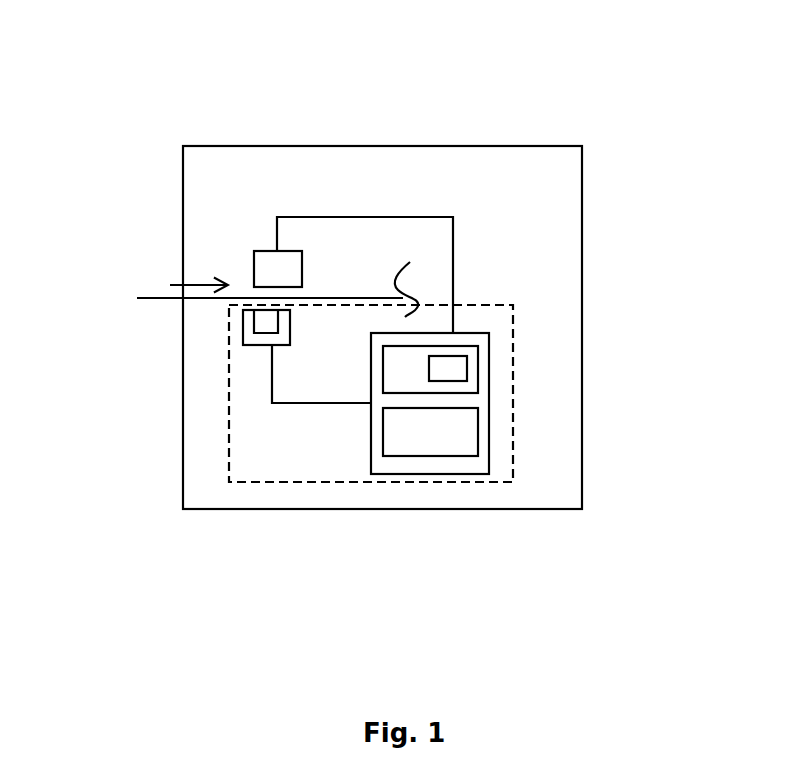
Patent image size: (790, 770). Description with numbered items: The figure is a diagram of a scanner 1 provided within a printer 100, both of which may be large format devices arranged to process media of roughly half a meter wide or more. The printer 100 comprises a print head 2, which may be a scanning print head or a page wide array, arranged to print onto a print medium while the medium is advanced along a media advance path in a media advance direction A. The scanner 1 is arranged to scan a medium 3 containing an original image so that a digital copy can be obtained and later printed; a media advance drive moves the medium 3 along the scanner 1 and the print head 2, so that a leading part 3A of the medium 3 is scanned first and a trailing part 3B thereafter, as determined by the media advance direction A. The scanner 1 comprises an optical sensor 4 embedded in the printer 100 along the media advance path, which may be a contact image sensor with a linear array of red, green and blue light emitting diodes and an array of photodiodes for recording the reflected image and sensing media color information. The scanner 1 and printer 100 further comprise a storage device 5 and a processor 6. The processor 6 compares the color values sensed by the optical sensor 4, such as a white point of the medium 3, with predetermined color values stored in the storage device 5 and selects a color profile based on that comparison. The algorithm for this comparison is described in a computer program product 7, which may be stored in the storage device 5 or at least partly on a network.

The printer 100 is at (582, 203).
The scanner 1 is at (228, 345).
The print head 2 is at (277, 262).
The medium 3 is at (157, 298).
The leading part 3A is at (359, 273).
The trailing part 3B is at (145, 285).
The media advance direction A is at (207, 285).
The optical sensor 4 is at (265, 325).
The storage device 5 is at (466, 388).
The processor 6 is at (442, 440).
The computer program product 7 is at (450, 368).